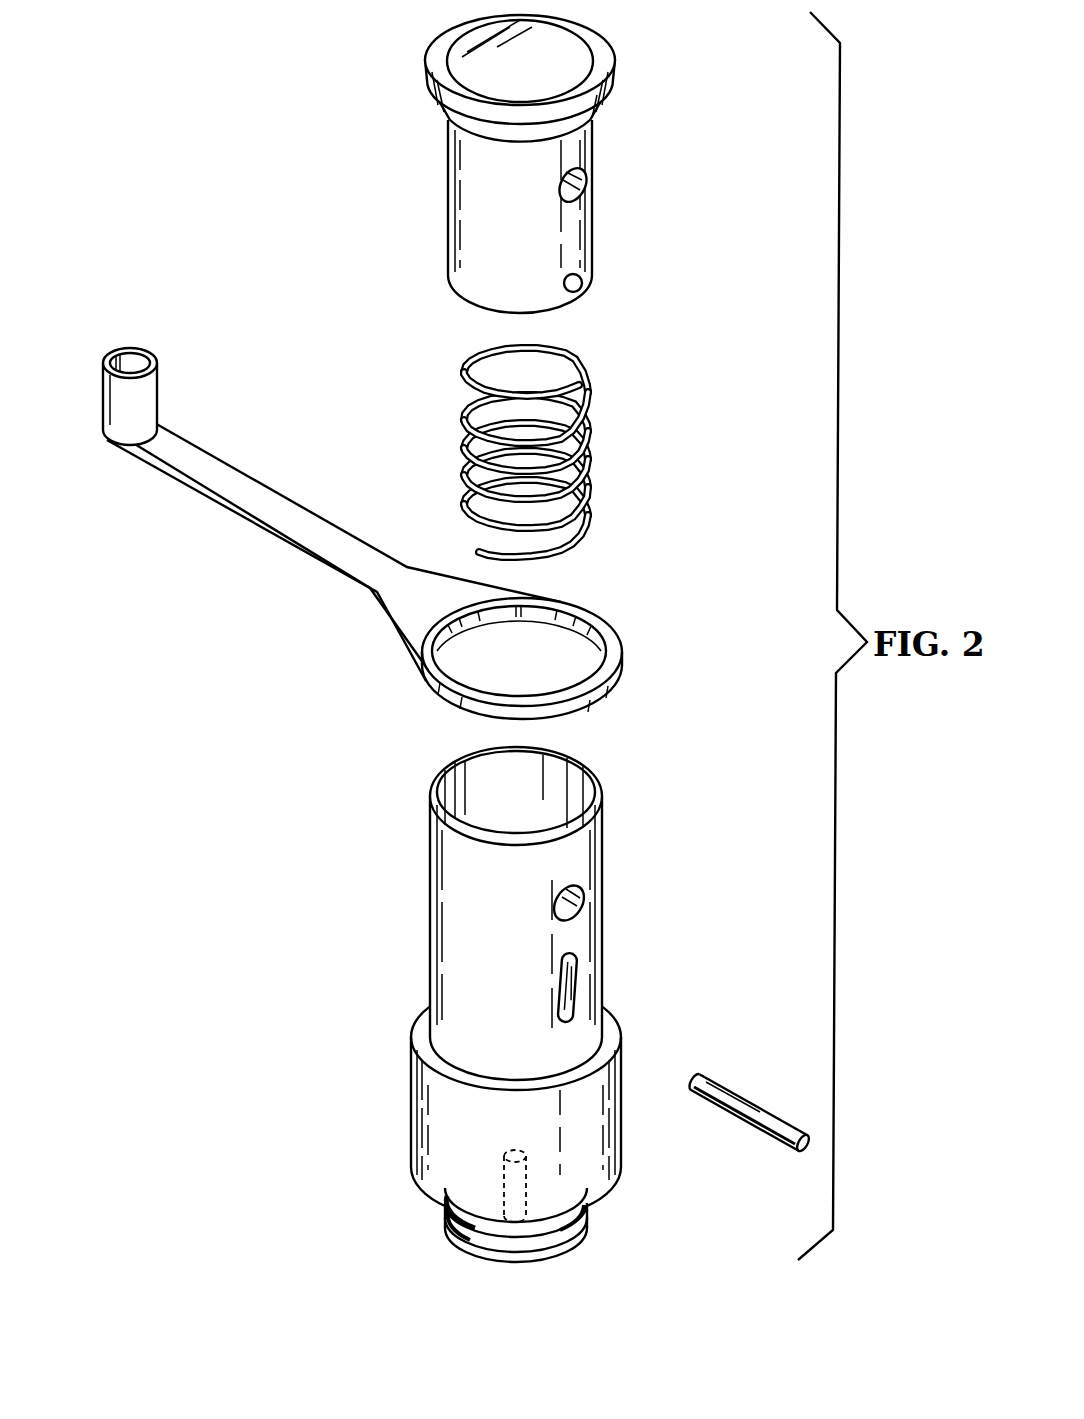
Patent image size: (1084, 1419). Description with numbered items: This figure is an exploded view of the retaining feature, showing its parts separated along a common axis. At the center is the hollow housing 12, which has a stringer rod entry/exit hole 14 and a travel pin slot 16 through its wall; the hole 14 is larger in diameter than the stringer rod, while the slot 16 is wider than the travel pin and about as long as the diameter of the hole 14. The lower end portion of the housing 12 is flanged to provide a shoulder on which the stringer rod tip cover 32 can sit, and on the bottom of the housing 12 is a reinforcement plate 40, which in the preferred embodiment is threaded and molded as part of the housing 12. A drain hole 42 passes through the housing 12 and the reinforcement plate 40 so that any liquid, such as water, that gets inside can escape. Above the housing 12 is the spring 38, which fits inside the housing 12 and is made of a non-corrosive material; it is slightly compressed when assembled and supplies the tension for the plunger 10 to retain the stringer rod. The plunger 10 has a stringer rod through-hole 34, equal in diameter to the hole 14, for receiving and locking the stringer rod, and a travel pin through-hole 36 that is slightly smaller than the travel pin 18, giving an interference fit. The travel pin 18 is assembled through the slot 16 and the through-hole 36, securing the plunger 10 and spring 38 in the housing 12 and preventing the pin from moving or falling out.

The plunger 10 is at (615, 70).
The hollow housing 12 is at (430, 847).
The stringer rod entry/exit hole 14 is at (581, 908).
The travel pin slot 16 is at (576, 993).
The travel pin 18 is at (742, 1124).
The stringer rod tip cover 32 is at (157, 392).
The stringer rod through-hole 34 is at (560, 189).
The travel pin through-hole 36 is at (564, 283).
The spring 38 is at (590, 455).
The reinforcement plate 40 is at (587, 1221).
The drain hole 42 is at (505, 1182).